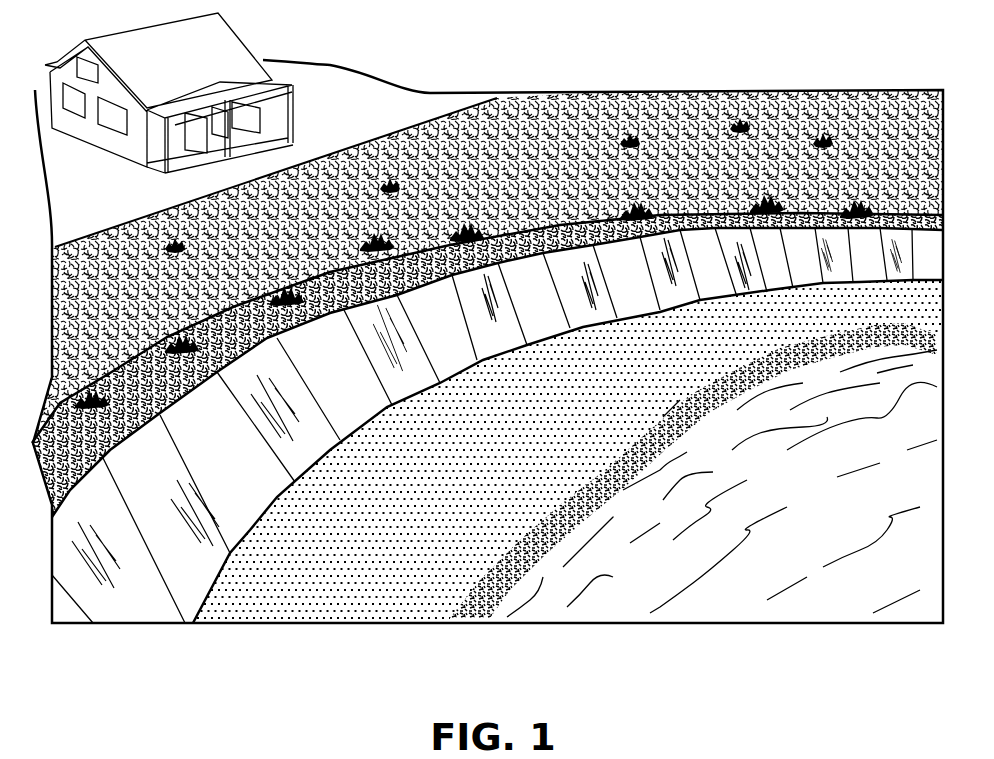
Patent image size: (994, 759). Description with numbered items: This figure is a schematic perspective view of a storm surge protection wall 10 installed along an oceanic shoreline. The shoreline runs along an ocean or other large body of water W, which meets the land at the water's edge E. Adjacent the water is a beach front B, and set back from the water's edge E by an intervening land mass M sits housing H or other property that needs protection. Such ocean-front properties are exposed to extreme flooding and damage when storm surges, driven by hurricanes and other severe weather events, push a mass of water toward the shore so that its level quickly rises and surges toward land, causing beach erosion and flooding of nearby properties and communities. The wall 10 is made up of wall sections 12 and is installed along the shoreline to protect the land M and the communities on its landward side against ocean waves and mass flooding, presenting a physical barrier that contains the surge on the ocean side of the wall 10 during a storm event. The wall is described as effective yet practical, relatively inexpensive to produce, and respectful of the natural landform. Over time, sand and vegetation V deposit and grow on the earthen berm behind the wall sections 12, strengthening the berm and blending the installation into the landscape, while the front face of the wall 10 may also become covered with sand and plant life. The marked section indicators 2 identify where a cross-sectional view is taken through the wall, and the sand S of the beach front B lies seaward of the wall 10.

The housing H is at (208, 52).
The land mass M is at (575, 130).
The vegetation V is at (825, 140).
The section line for FIG. 2 is at (138, 316).
The storm surge protection wall 10 is at (88, 562).
The wall sections 12 is at (180, 540).
The sand / shore S is at (330, 583).
The beach front B is at (408, 580).
The water's edge E is at (535, 563).
The water W is at (785, 530).